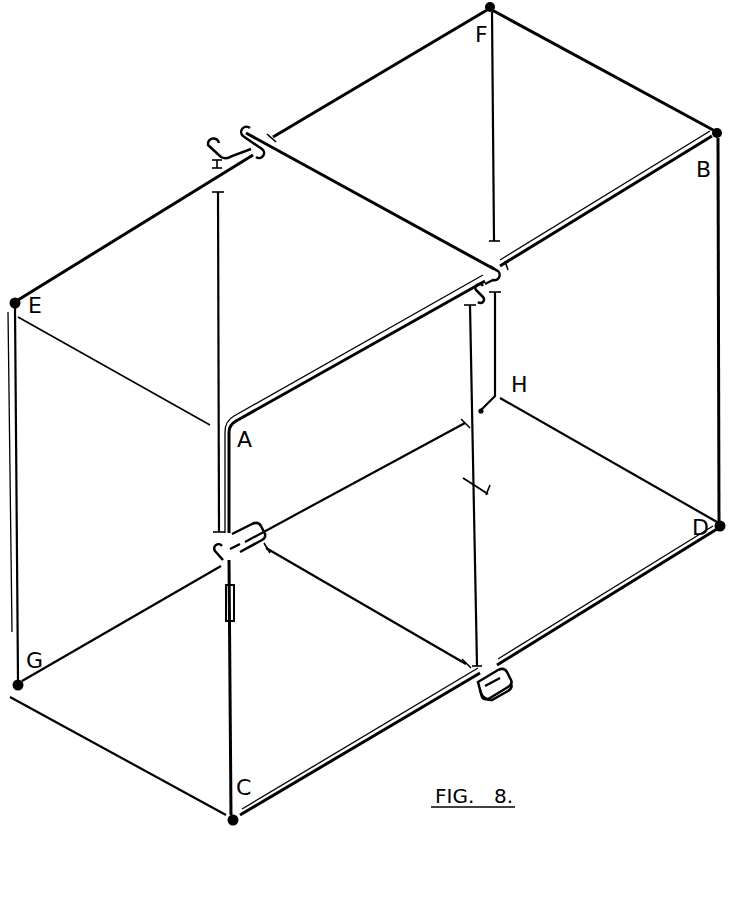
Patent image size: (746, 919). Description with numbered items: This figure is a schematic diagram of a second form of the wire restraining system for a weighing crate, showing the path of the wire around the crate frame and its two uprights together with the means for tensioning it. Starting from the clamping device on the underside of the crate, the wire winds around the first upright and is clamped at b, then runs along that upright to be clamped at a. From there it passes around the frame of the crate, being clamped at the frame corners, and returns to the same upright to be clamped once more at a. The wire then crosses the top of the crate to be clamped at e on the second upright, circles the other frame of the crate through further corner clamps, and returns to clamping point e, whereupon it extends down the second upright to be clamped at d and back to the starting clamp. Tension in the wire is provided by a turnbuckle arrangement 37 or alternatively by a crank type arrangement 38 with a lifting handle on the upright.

The turnbuckle arrangement 37 is at (239, 614).
The crank type arrangement 38 is at (496, 480).
The clamping point e is at (225, 143).
The clamping point a is at (472, 278).
The clamping point d is at (227, 541).
The clamping point b is at (504, 684).